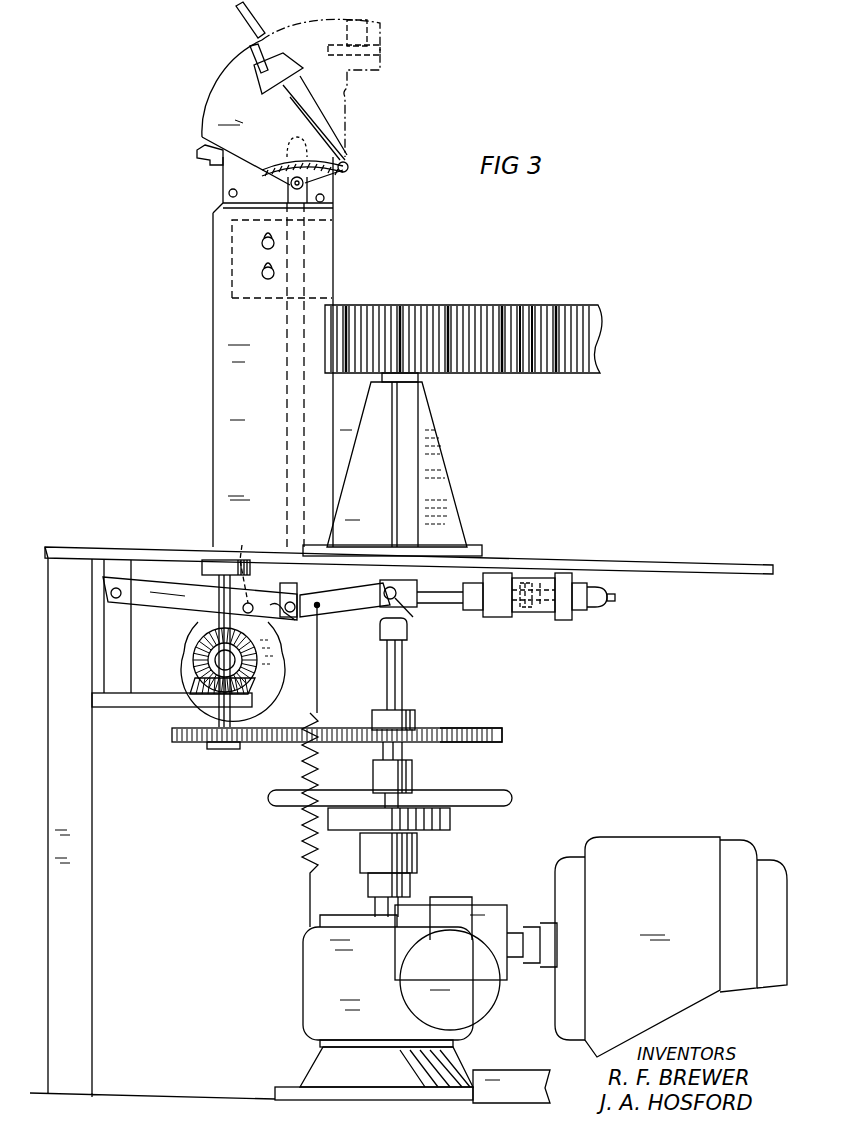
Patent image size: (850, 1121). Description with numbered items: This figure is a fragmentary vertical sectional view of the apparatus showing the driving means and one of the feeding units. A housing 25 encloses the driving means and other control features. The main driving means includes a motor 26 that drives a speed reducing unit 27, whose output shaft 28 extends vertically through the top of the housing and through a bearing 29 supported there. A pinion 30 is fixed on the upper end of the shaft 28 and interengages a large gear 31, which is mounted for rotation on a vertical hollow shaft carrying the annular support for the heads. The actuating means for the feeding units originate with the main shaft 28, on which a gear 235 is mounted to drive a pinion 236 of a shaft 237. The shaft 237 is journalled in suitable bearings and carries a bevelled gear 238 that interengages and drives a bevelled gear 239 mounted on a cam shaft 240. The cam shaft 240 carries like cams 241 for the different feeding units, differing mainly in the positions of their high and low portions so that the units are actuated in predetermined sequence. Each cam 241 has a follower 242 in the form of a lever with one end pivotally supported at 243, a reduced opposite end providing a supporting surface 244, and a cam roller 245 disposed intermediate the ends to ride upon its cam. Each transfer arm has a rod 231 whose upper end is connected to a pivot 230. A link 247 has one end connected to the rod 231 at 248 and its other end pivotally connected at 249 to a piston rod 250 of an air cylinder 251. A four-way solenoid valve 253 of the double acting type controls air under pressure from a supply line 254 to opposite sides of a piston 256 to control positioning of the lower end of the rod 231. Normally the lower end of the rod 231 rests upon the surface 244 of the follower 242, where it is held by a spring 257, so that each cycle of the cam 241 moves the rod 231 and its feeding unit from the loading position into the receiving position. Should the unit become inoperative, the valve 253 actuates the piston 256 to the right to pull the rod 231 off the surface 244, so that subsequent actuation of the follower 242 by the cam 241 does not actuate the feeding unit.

The housing 25 is at (720, 568).
The motor 26 is at (573, 878).
The speed reducing unit 27 is at (320, 945).
The output shaft 28 is at (400, 698).
The bearing 29 is at (430, 466).
The pinion 30 is at (428, 290).
The large gear 31 is at (553, 376).
The pivot 230 is at (341, 182).
The rod 231 is at (308, 322).
The gear 235 is at (482, 738).
The pinion 236 is at (177, 741).
The shaft 237 is at (220, 590).
The bevelled gear 238 is at (253, 688).
The bevelled gear 239 is at (203, 658).
The cam shaft 240 is at (200, 677).
The cam 241 is at (188, 643).
The follower 242 is at (147, 600).
The pivot 243 is at (112, 592).
The supporting surface 244 is at (285, 613).
The cam roller 245 is at (242, 565).
The link 247 is at (342, 603).
The connection 248 is at (299, 591).
The pivotal connection 249 is at (397, 601).
The piston rod 250 is at (460, 610).
The air cylinder 251 is at (528, 590).
The four-way solenoid valve 253 is at (593, 608).
The supply line 254 is at (614, 600).
The piston 256 is at (535, 605).
The spring 257 is at (320, 713).